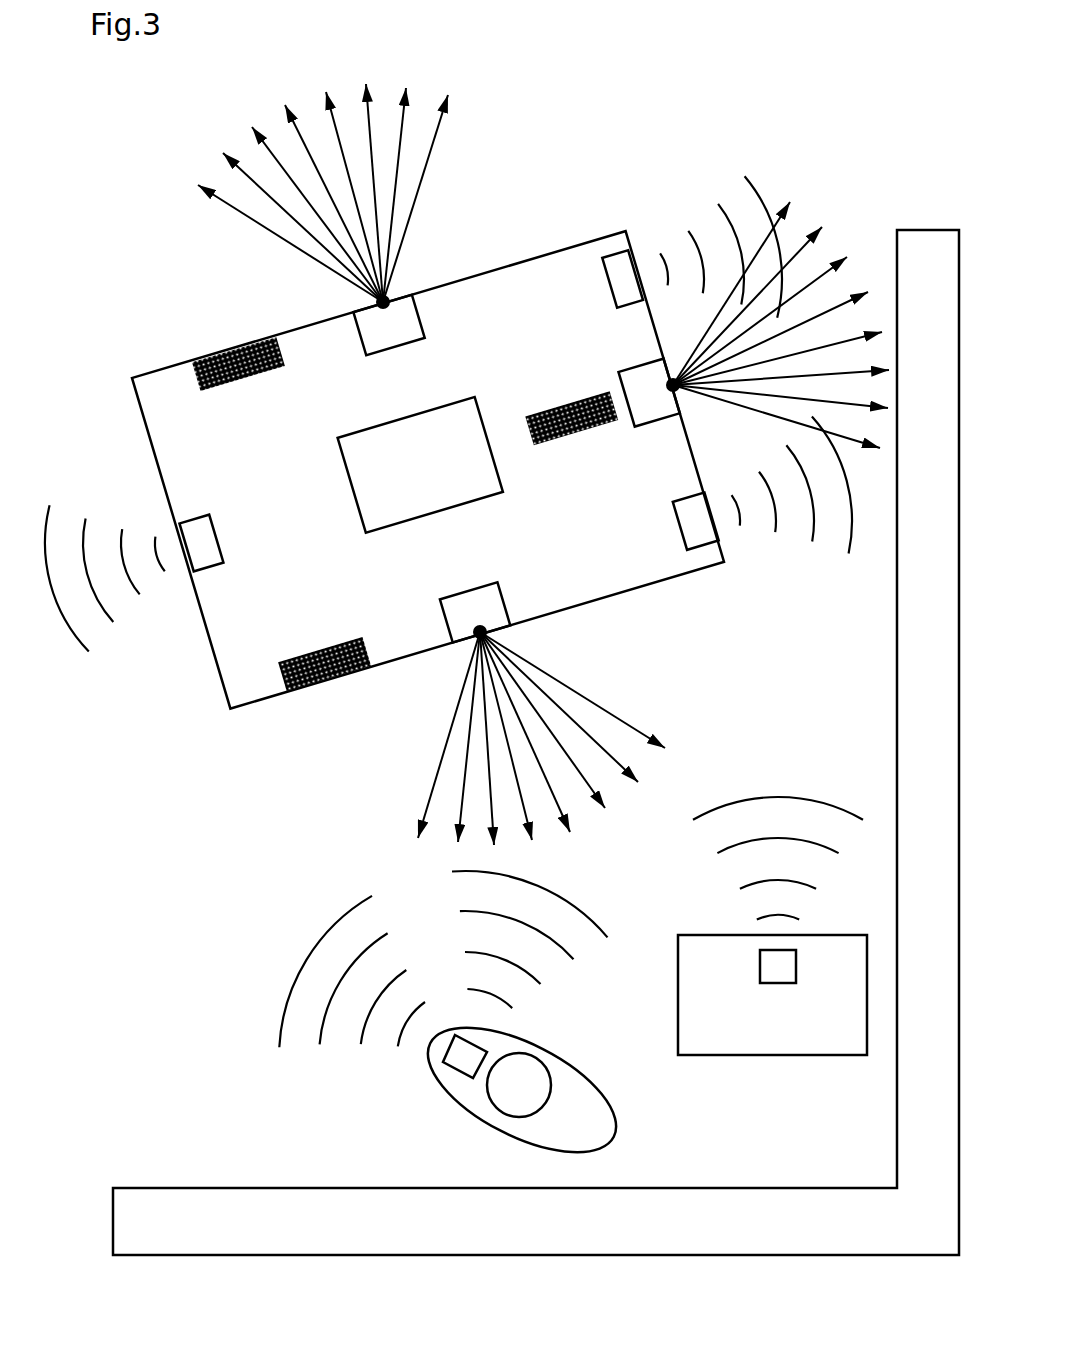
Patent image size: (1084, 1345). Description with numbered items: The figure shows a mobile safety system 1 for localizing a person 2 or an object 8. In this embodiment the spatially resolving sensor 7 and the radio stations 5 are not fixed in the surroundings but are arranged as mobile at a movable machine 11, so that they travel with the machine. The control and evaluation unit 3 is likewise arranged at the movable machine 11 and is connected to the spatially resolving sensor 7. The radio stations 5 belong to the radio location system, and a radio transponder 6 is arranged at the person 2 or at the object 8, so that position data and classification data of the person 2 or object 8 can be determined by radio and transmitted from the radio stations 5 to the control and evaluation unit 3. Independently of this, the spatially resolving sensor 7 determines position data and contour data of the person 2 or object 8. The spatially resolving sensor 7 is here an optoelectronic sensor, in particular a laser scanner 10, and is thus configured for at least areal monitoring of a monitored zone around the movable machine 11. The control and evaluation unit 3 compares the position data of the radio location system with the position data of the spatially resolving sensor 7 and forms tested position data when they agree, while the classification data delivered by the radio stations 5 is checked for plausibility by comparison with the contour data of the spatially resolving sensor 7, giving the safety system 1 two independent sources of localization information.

The safety system 1 is at (727, 83).
The person 2 is at (595, 1125).
The control and evaluation unit 3 is at (380, 450).
The radio stations 5 is at (617, 268).
The radio transponder 6 is at (458, 1060).
The spatially resolving sensor 7 is at (410, 323).
The object 8 is at (795, 1048).
The laser scanner 10 is at (397, 348).
The movable machine 11 is at (493, 270).